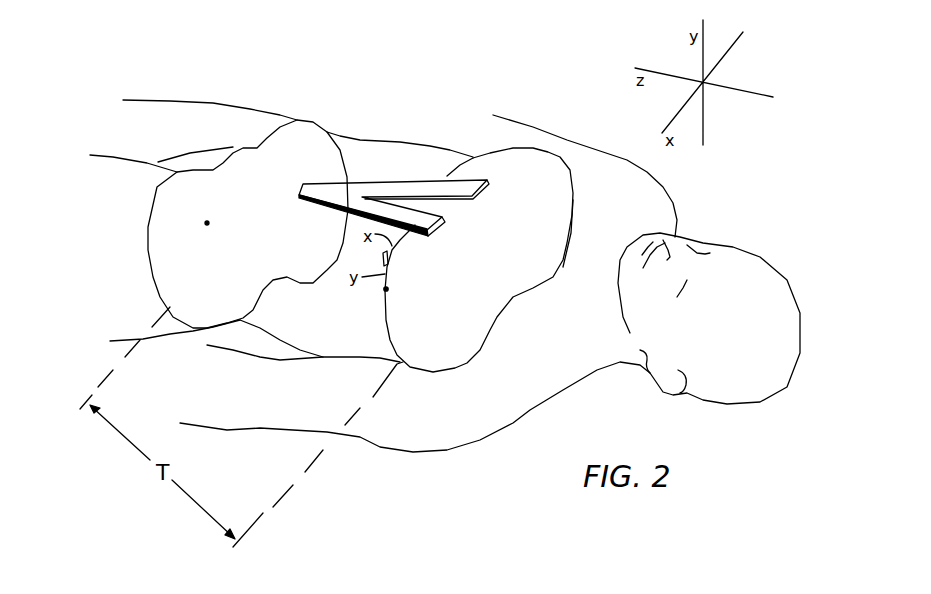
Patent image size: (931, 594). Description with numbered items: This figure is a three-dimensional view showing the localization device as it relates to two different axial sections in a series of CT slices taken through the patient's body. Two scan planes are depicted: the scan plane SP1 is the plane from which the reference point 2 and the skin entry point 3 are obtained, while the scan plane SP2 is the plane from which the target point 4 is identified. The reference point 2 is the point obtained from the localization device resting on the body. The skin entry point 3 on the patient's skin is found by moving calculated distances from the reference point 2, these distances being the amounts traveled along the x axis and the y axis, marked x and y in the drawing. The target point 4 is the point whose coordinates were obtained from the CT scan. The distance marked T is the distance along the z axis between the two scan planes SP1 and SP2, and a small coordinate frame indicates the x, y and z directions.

The reference point 2 is at (413, 223).
The skin entry point 3 is at (387, 289).
The target point 4 is at (207, 224).
The scan plane SP1 is at (574, 190).
The scan plane SP2 is at (342, 148).